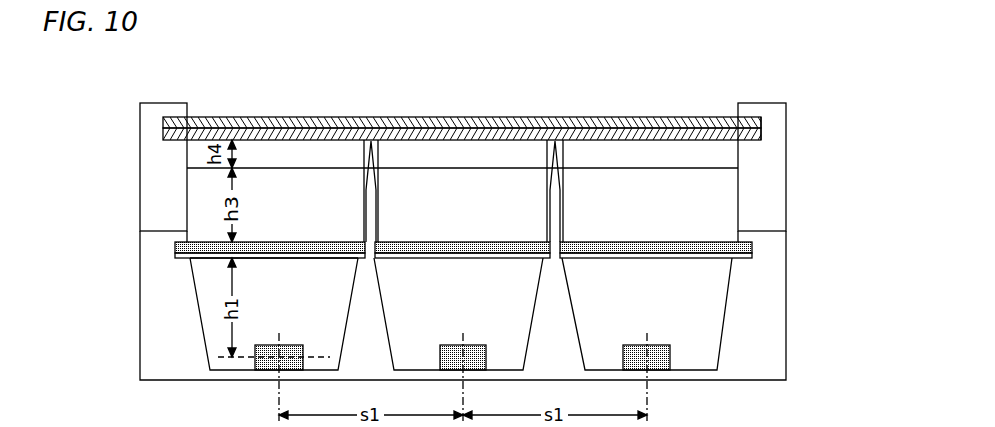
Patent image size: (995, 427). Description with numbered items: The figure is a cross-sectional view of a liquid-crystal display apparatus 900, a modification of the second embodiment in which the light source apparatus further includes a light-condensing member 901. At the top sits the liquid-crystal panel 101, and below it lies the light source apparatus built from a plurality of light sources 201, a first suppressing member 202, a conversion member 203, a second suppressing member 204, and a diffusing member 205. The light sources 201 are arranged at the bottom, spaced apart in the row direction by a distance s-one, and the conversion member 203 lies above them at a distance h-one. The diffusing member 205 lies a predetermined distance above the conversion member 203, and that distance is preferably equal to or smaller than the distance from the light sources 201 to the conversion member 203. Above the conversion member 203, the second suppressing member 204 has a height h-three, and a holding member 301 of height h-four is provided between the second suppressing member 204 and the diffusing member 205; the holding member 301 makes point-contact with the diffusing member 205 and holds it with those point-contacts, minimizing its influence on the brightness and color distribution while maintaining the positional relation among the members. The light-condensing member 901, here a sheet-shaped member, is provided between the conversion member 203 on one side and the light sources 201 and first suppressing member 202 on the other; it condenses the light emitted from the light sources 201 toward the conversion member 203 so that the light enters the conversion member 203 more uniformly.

The liquid-crystal panel 101 is at (293, 118).
The light sources 201 is at (452, 344).
The first suppressing member 202 is at (568, 322).
The conversion member 203 is at (643, 250).
The second suppressing member 204 is at (150, 173).
The diffusing member 205 is at (762, 133).
The holding member 301 is at (555, 142).
The liquid-crystal display apparatus 900 is at (463, 257).
The light-condensing member 901 is at (287, 258).